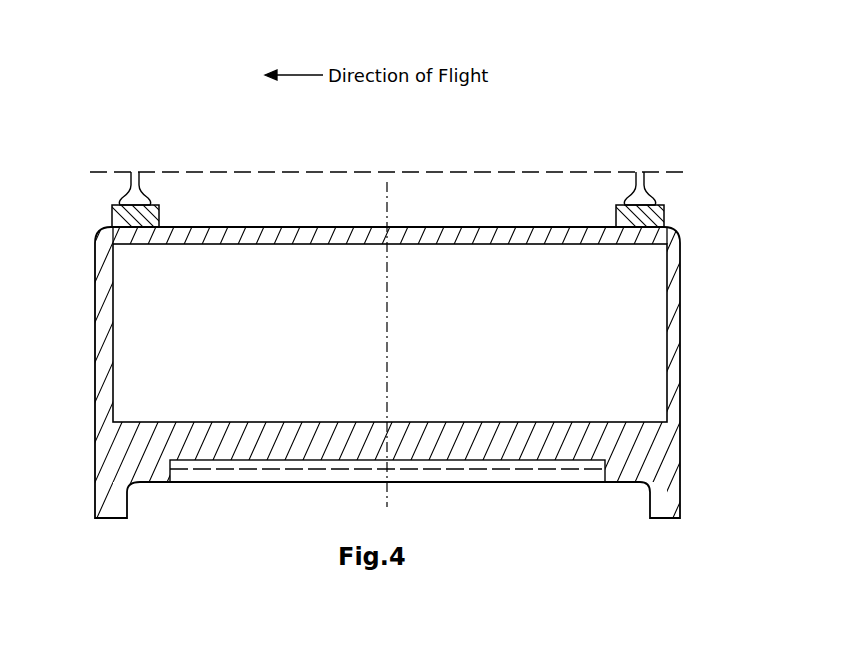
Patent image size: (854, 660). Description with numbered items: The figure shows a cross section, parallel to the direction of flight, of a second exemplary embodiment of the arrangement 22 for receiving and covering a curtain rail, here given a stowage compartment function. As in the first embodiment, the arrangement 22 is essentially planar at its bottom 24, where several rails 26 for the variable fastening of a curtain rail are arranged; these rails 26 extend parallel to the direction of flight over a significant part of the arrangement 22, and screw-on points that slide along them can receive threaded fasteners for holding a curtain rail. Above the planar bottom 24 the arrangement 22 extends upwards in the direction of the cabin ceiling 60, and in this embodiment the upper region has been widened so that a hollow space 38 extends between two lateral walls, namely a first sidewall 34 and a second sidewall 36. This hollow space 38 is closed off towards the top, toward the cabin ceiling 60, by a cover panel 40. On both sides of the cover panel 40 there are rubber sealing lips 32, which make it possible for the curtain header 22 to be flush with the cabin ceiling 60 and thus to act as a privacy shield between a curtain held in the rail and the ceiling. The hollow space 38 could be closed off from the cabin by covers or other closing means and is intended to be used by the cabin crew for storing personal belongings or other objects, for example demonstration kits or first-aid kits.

The arrangement for receiving a curtain rail 22 is at (480, 153).
The bottom of the arrangement 24 is at (481, 487).
The rail 26 is at (563, 448).
The sealing lip 32 is at (137, 190).
The sidewall 34 is at (101, 285).
The sidewall 36 is at (672, 268).
The hollow space 38 is at (295, 355).
The cover panel 40 is at (374, 234).
The cabin ceiling 60 is at (401, 174).